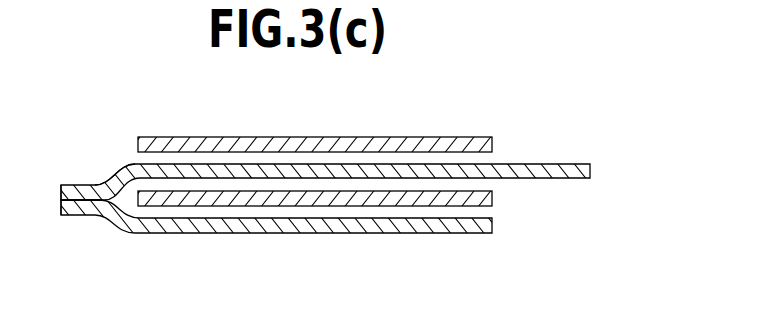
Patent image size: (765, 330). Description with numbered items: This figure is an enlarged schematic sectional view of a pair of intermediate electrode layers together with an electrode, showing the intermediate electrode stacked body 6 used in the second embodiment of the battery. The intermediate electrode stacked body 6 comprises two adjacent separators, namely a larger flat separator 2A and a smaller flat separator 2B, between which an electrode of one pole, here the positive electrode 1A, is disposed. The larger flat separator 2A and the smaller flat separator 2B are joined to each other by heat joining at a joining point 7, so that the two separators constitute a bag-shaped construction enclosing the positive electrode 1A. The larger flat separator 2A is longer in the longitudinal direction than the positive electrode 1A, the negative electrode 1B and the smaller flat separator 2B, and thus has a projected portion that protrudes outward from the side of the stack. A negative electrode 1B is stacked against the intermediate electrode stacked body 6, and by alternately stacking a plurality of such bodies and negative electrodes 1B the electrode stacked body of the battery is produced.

The positive electrode 1A is at (468, 197).
The negative electrode 1B is at (439, 142).
The larger flat separator 2A is at (306, 172).
The smaller flat separator 2B is at (342, 224).
The intermediate electrode stacked body 6 is at (117, 146).
The joining point 7 is at (70, 190).